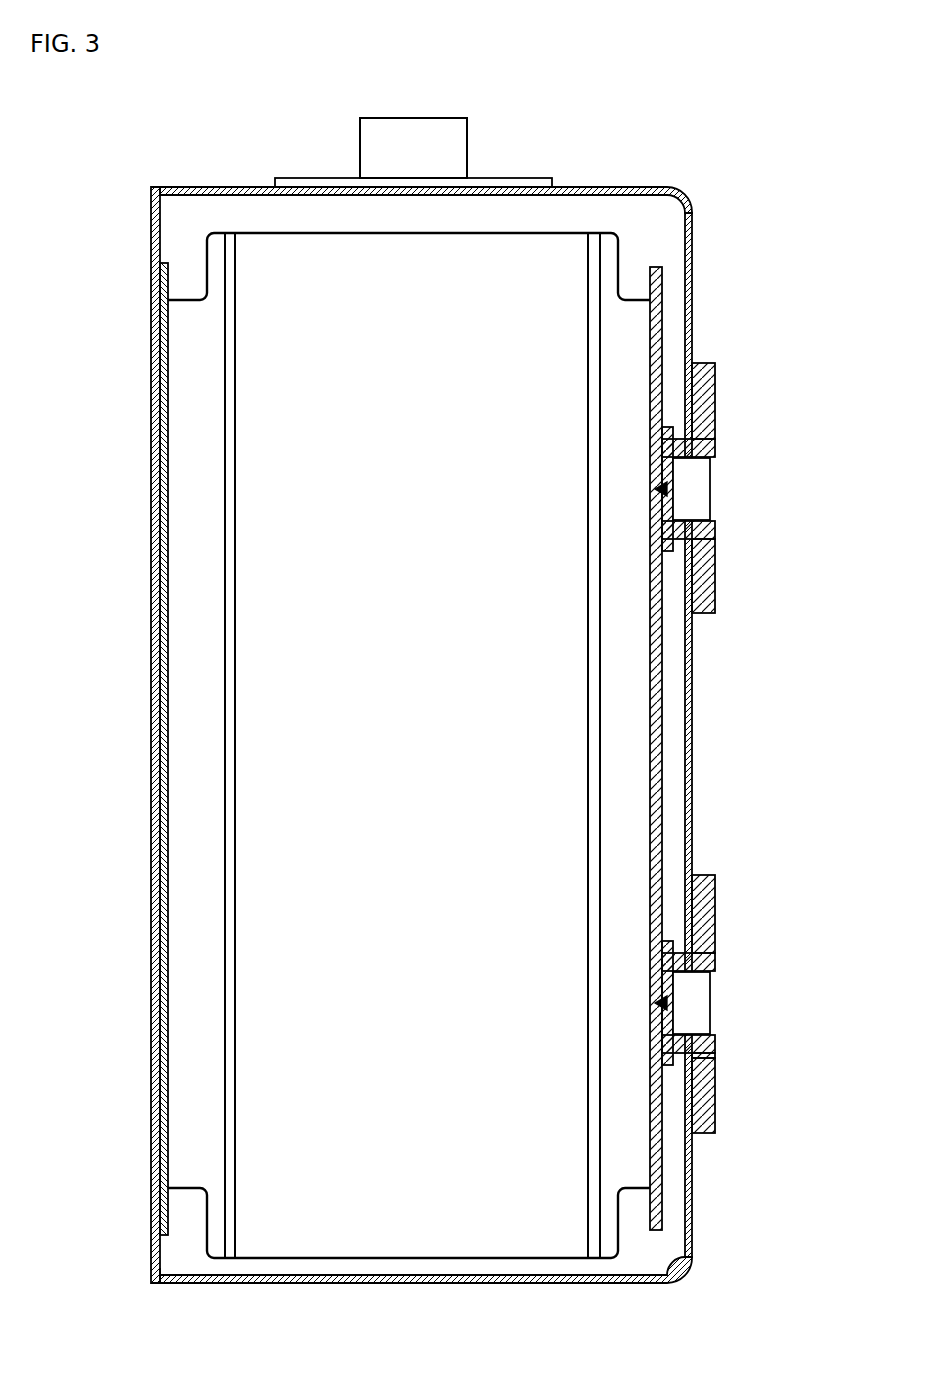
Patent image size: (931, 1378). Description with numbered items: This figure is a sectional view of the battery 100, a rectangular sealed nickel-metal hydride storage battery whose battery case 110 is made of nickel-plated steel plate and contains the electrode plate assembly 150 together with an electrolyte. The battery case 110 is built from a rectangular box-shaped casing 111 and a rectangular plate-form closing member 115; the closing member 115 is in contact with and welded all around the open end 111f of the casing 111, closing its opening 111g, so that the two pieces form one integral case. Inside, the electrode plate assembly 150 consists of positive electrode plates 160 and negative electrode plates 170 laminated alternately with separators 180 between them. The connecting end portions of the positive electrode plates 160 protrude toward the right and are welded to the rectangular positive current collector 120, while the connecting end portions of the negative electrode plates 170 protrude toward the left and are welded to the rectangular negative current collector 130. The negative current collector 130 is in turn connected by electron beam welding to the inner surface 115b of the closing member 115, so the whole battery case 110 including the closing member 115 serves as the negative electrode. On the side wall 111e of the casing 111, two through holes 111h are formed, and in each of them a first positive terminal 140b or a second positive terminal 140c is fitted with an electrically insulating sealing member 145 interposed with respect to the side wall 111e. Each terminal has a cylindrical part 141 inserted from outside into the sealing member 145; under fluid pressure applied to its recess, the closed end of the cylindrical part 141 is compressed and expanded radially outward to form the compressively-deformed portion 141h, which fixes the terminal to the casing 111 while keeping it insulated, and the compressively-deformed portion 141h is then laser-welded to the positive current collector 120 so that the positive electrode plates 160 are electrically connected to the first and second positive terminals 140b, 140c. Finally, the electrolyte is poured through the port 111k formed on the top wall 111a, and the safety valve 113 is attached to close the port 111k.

The battery 100 is at (612, 155).
The battery case 110 is at (215, 187).
The casing 111 is at (260, 188).
The top wall 111a is at (582, 188).
The side wall 111e is at (693, 236).
The open end 111f is at (152, 1282).
The opening 111g is at (203, 1277).
The through hole 111h is at (713, 457).
The port 111k is at (388, 186).
The safety valve 113 is at (455, 138).
The closing member 115 is at (160, 250).
The inner surface 115b is at (165, 228).
The positive current collector 120 is at (660, 1210).
The negative current collector 130 is at (160, 612).
The first positive terminal 140b is at (710, 612).
The second positive terminal 140c is at (707, 923).
The cylindrical part 141 is at (690, 515).
The compressively-deformed portion 141h is at (707, 1062).
The sealing member 145 is at (707, 423).
The electrode plate assembly 150 is at (300, 1220).
The positive electrode plate 160 is at (635, 328).
The negative electrode plate 170 is at (195, 448).
The separator 180 is at (560, 270).